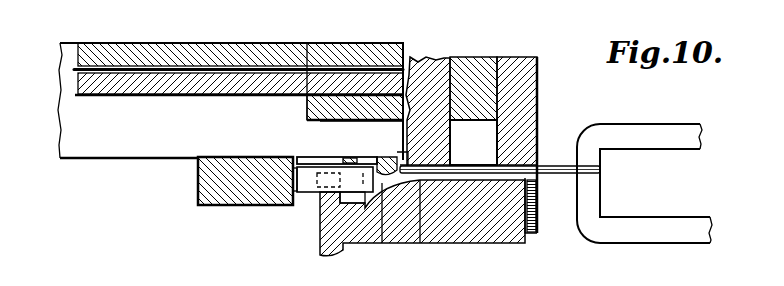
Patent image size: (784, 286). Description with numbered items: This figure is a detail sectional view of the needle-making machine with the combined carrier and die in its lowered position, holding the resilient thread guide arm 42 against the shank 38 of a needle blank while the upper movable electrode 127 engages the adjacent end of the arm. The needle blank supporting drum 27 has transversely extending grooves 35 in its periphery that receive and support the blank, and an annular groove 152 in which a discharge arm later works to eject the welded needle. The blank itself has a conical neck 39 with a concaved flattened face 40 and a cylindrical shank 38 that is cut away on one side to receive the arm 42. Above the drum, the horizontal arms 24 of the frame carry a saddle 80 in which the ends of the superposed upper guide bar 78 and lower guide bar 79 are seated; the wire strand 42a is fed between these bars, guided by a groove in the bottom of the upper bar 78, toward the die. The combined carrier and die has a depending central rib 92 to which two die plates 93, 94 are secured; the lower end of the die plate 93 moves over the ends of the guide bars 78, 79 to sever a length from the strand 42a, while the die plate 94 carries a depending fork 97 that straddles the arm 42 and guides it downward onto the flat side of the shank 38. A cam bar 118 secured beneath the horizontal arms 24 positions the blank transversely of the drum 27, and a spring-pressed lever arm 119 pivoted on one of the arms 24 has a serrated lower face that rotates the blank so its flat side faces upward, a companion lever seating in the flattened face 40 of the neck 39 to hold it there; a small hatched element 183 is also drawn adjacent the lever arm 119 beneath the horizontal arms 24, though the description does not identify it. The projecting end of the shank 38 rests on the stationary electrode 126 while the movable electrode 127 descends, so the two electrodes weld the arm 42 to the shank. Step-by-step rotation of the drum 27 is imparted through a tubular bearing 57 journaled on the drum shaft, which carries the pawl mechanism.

The horizontal arms 24 is at (108, 143).
The upper guide bar 78 is at (125, 43).
The wire strand 42a is at (74, 70).
The lower guide bar 79 is at (98, 92).
The cam bar 118 is at (235, 205).
The lever arm 119 is at (313, 153).
The insert 183 is at (360, 153).
The concaved flattened face 40 is at (392, 156).
The saddle 80 is at (355, 121).
The tubular bearing 57 is at (290, 195).
The annular groove 152 is at (343, 205).
The needle blank supporting drum 27 is at (472, 230).
The conical neck 39 is at (382, 243).
The transversely extending grooves 35 is at (420, 243).
The die plate 93 is at (440, 58).
The depending central rib 92 is at (470, 60).
The die plate 94 is at (525, 58).
The resilient thread guide arm 42 is at (555, 160).
The shank 38 is at (558, 173).
The depending fork 97 is at (540, 218).
The movable electrode 127 is at (640, 135).
The stationary electrode 126 is at (627, 228).